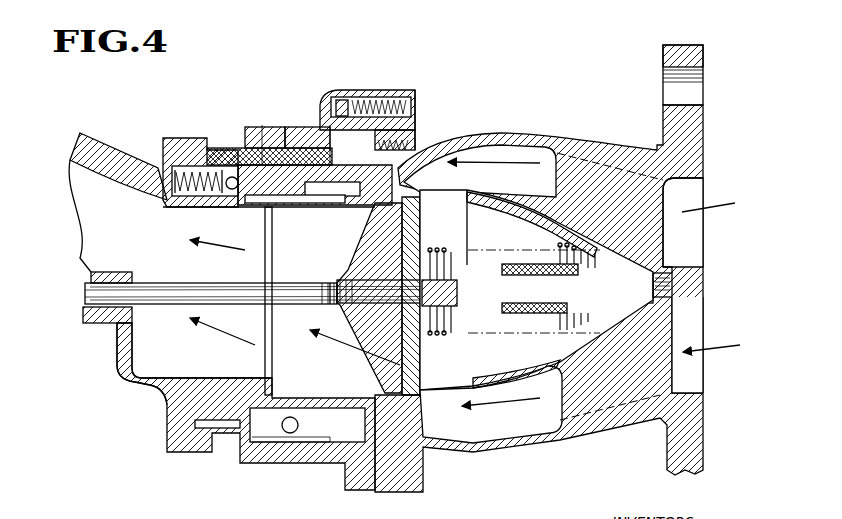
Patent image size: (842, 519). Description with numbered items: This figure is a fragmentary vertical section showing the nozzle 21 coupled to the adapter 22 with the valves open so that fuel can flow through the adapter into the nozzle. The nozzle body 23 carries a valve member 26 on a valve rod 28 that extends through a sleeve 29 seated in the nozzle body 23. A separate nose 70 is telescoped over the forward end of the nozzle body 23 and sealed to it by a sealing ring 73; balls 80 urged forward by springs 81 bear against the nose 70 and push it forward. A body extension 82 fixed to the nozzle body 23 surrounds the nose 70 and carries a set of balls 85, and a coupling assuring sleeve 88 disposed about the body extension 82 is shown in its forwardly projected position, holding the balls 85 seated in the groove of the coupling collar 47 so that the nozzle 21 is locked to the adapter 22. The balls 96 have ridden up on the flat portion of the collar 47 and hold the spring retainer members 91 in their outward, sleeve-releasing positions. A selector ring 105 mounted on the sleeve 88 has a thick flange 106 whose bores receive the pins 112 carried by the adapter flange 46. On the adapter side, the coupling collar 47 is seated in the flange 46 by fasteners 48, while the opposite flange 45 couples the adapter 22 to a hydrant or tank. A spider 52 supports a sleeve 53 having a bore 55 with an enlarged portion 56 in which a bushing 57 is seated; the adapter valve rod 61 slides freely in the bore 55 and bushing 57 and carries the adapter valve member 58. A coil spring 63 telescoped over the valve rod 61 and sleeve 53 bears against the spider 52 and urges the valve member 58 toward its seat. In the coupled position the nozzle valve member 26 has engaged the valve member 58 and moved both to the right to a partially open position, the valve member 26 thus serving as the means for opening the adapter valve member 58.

The nozzle 21 is at (100, 140).
The adapter 22 is at (575, 142).
The nozzle body 23 is at (118, 357).
The valve member 26 is at (362, 240).
The valve rod 28 is at (175, 306).
The sleeve 29 is at (133, 272).
The flange 45 is at (688, 128).
The flange 46 is at (416, 95).
The coupling collar 47 is at (270, 128).
The fasteners 48 is at (416, 135).
The spider 52 is at (650, 252).
The sleeve 53 is at (520, 264).
The bore 55 is at (675, 292).
The enlarged portion of the bore 56 is at (560, 316).
The bushing 57 is at (498, 313).
The valve member 58 is at (417, 215).
The valve rod 61 is at (463, 292).
The coil spring 63 is at (560, 252).
The nose 70 is at (280, 210).
The sealing ring 73 is at (258, 207).
The balls 80 is at (231, 190).
The springs 81 is at (195, 193).
The body extension 82 is at (215, 140).
The balls 85 is at (305, 127).
The coupling assuring sleeve 88 is at (220, 147).
The spring retainer members 91 is at (308, 445).
The ball 96 is at (290, 436).
The selector ring 105 is at (292, 125).
The flange 106 is at (335, 95).
The pins 112 is at (345, 100).